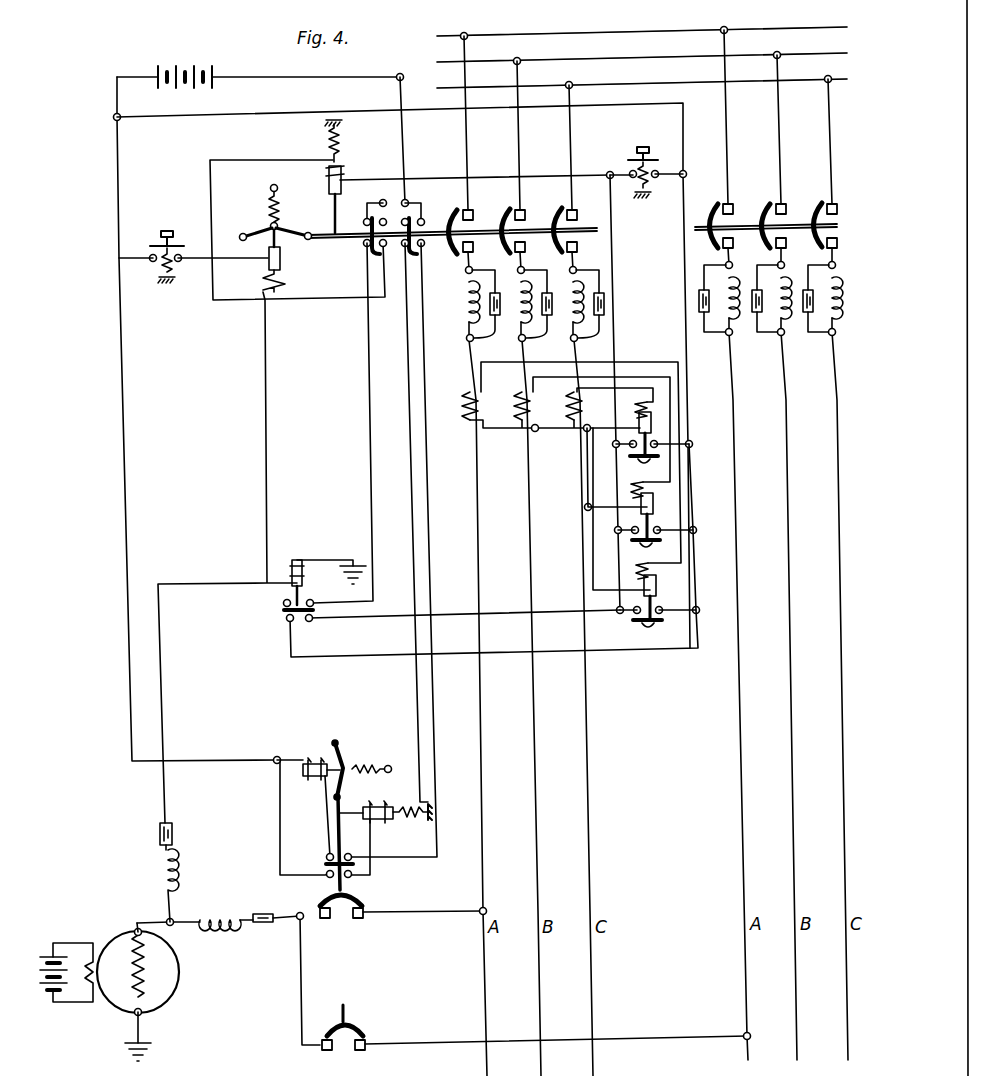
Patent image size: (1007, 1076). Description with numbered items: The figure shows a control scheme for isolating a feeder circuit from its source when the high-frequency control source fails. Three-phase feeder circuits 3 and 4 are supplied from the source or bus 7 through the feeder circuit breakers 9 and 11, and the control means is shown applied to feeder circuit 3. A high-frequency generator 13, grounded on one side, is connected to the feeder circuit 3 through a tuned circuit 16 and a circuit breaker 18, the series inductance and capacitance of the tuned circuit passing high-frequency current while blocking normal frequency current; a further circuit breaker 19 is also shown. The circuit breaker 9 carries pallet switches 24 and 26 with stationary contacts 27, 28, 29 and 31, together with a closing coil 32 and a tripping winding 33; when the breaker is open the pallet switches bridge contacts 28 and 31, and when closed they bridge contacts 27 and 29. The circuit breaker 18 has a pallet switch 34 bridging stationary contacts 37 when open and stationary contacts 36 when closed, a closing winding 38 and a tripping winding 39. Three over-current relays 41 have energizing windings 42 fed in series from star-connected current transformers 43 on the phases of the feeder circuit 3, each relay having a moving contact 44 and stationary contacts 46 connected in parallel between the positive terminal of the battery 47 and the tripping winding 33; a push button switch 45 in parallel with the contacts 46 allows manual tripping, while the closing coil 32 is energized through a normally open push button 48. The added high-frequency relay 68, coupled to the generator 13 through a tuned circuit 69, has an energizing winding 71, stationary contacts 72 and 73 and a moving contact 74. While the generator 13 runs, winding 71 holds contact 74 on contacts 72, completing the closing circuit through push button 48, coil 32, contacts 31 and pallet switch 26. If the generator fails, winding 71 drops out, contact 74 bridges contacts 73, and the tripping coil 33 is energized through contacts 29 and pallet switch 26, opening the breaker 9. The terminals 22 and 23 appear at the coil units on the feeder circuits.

The feeder circuit 3 is at (474, 262).
The feeder circuit 4 is at (735, 259).
The source or bus 7 is at (657, 90).
The circuit breaker 9 is at (564, 228).
The feeder circuit breaker 11 is at (823, 224).
The high-frequency generator 13 is at (208, 963).
The tuned circuit 16 is at (247, 911).
The circuit breaker 18 is at (353, 895).
The circuit breaker 19 is at (347, 1011).
The terminal 22 is at (474, 340).
The terminal 23 is at (730, 336).
The pallet switch 24 is at (423, 248).
The pallet switch 26 is at (382, 248).
The stationary contact 27 is at (424, 220).
The stationary contact 28 is at (408, 206).
The stationary contact 29 is at (393, 200).
The stationary contact 31 is at (367, 222).
The energizing coil 32 is at (285, 266).
The energizing winding 33 is at (331, 172).
The pallet switch 34 is at (328, 874).
The stationary contacts 36 is at (352, 875).
The stationary contacts 37 is at (328, 856).
The energizing winding 38 is at (320, 752).
The energizing winding 39 is at (372, 810).
The over-current relays 41 is at (671, 412).
The energizing windings 42 is at (644, 402).
The current transformers 43 is at (483, 408).
The moving contact 44 is at (652, 548).
The push button switch 45 is at (617, 174).
The stationary contacts 46 is at (665, 610).
The battery 47 is at (195, 61).
The push button arrangement 48 is at (173, 240).
The high-frequency relay 68 is at (334, 589).
The tuned circuit 69 is at (172, 848).
The energizing winding 71 is at (283, 572).
The stationary contacts 72 is at (282, 602).
The stationary contacts 73 is at (286, 621).
The moving contact 74 is at (317, 607).